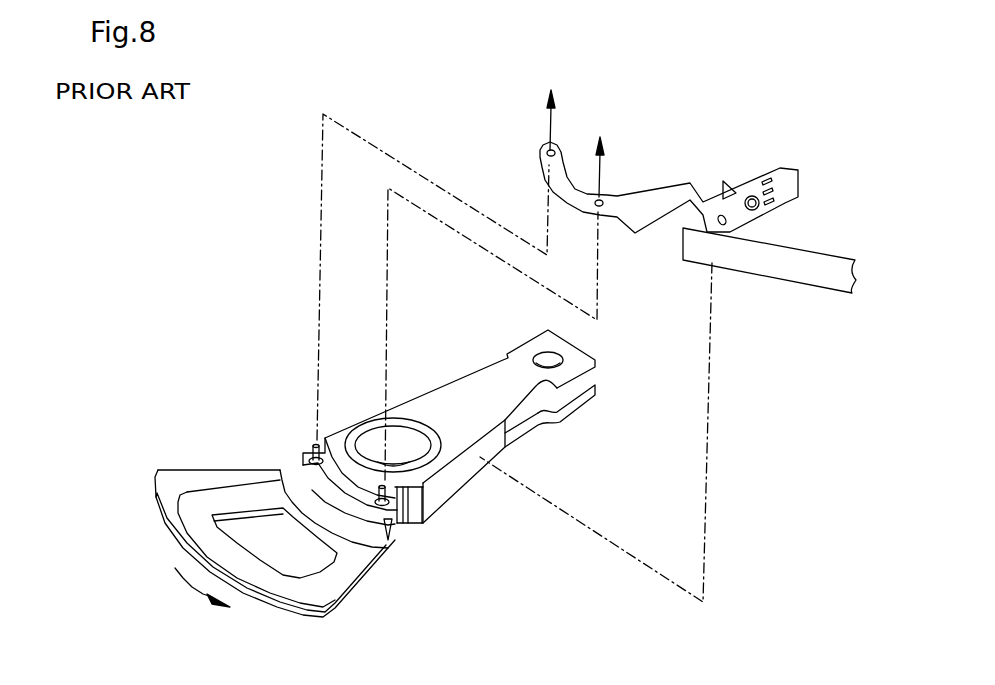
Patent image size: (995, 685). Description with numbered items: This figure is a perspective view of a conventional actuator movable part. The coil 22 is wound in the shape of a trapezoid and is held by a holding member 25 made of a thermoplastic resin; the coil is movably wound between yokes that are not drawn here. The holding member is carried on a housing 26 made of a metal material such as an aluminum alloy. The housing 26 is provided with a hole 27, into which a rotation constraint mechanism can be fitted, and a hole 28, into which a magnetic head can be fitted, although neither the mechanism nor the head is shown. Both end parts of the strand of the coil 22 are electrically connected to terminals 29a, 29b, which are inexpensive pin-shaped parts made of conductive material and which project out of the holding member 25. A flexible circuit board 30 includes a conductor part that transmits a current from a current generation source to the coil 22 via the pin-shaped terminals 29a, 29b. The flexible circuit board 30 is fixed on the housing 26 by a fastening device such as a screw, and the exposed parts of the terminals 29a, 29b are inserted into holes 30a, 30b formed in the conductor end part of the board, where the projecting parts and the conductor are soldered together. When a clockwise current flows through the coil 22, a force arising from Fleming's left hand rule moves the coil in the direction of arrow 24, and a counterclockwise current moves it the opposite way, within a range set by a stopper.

The coil 22 is at (340, 571).
The arrow 24 is at (198, 592).
The holding member 25 is at (292, 473).
The housing 26 is at (553, 413).
The hole 27 is at (398, 447).
The hole 28 is at (557, 352).
The terminal 29a is at (315, 447).
The terminal 29b is at (408, 535).
The flexible circuit board 30 is at (797, 177).
The hole 30a is at (553, 152).
The hole 30b is at (607, 197).